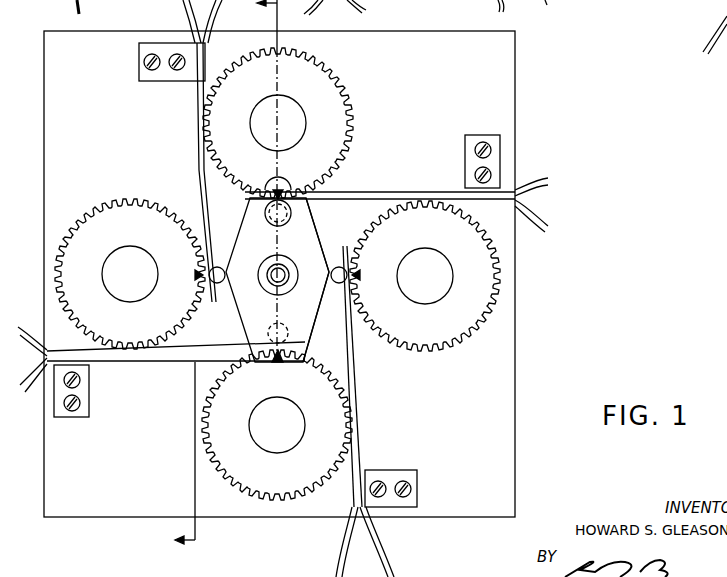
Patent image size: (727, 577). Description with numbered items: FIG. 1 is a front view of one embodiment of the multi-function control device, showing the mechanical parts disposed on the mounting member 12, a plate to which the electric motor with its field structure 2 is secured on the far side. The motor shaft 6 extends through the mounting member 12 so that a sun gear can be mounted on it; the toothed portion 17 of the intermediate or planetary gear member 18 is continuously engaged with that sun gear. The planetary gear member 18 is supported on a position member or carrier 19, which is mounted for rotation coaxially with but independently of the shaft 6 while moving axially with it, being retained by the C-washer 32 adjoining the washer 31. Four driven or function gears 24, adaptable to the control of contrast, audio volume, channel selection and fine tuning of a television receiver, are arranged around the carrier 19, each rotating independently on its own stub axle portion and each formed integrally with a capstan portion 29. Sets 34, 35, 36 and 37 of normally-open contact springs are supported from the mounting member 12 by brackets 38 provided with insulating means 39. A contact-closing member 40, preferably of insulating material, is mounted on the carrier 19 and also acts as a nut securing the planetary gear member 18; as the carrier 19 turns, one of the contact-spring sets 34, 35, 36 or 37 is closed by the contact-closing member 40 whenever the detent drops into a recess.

The field structure 2 is at (215, 275).
The shaft 6 is at (281, 280).
The mounting member 12 is at (456, 92).
The toothed portion 17 is at (284, 276).
The planetary gear member 18 is at (316, 213).
The carrier 19 is at (316, 312).
The function gears 24 is at (323, 67).
The capstan portion 29 is at (296, 96).
The washer 31 is at (291, 277).
The C-washer 32 is at (284, 271).
The set of normally-open contact springs 34 is at (356, 196).
The set of normally-open contact springs 35 is at (362, 396).
The set of normally-open contact springs 36 is at (157, 359).
The set of normally-open contact springs 37 is at (197, 143).
The brackets 38 is at (142, 81).
The insulating means 39 is at (198, 84).
The contact-closing member 40 is at (282, 223).